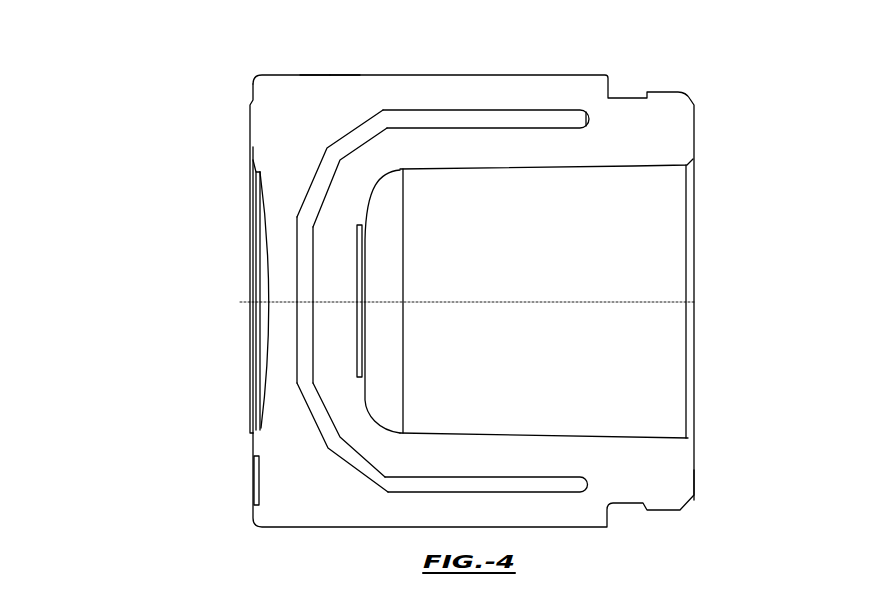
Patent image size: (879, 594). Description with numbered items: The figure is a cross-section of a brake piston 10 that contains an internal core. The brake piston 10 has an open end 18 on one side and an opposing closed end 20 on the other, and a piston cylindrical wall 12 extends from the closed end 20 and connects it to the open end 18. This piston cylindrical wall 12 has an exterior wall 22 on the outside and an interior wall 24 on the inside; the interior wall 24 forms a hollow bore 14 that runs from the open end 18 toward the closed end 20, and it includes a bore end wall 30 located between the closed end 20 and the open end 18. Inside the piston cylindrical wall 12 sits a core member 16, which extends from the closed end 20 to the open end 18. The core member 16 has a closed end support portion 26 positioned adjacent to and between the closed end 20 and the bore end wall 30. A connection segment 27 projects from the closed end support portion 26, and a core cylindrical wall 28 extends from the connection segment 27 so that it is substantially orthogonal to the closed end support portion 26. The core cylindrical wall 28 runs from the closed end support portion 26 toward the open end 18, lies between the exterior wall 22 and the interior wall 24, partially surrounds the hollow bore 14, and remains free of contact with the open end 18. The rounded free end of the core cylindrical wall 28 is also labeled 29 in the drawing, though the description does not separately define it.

The brake piston 10 is at (130, 64).
The piston cylindrical wall 12 is at (639, 114).
The hollow bore 14 is at (632, 256).
The core member 16 is at (300, 331).
The open end 18 is at (693, 472).
The closed end 20 is at (250, 282).
The exterior wall 22 is at (328, 74).
The interior wall 24 is at (647, 166).
The closed end support portion 26 is at (303, 247).
The connection segment 27 is at (322, 183).
The core cylindrical wall 28 is at (453, 117).
The flange rounded end 29 is at (588, 120).
The bore end wall 30 is at (365, 285).